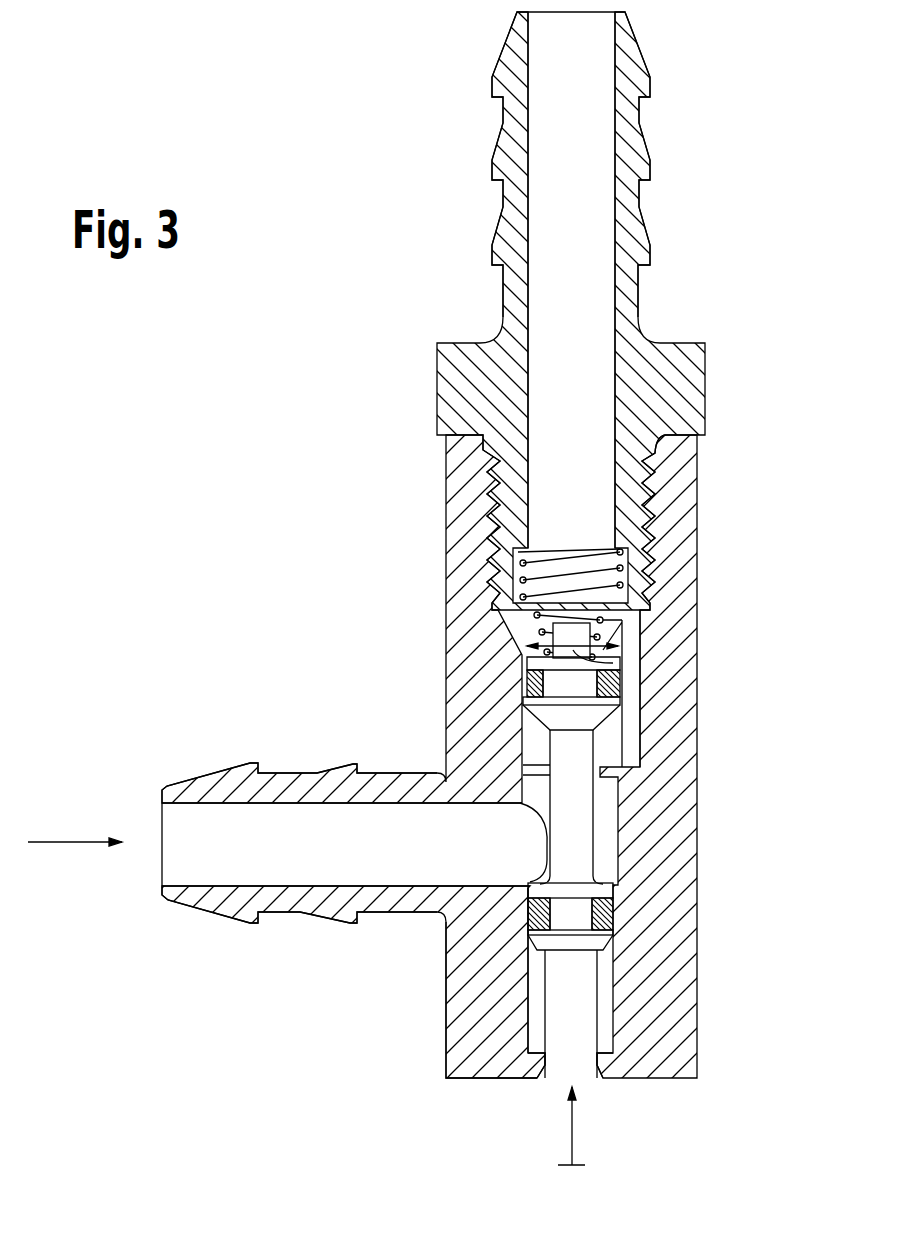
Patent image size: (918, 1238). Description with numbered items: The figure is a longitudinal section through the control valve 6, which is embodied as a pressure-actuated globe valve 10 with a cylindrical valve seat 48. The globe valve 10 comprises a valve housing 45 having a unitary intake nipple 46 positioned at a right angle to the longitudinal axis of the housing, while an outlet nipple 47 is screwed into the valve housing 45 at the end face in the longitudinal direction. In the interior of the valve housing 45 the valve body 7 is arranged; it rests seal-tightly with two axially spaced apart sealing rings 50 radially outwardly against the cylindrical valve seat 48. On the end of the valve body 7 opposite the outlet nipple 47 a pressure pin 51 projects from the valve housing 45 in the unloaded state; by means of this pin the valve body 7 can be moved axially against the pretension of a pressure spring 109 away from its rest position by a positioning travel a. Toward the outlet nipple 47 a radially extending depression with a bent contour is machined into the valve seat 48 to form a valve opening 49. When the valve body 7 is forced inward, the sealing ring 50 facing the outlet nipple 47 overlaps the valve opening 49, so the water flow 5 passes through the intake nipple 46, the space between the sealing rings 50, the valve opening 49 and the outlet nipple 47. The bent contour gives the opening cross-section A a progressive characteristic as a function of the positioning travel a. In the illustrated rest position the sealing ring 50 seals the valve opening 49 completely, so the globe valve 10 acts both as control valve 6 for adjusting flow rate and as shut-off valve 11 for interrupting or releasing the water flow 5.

The control valve 6 is at (300, 490).
The globe valve 10 is at (667, 1017).
The shut-off valve 11 is at (444, 603).
The valve housing 45 is at (478, 1008).
The intake nipple 46 is at (278, 900).
The outlet nipple 47 is at (635, 234).
The valve seat 48 is at (517, 658).
The valve opening 49 is at (630, 747).
The sealing ring 50 is at (612, 683).
The pressure pin 51 is at (583, 1080).
The pressure spring 109 is at (653, 580).
The valve body 7 is at (577, 820).
The water flow 5 is at (65, 842).
The positioning travel a is at (572, 1130).
The opening cross-section A is at (618, 663).